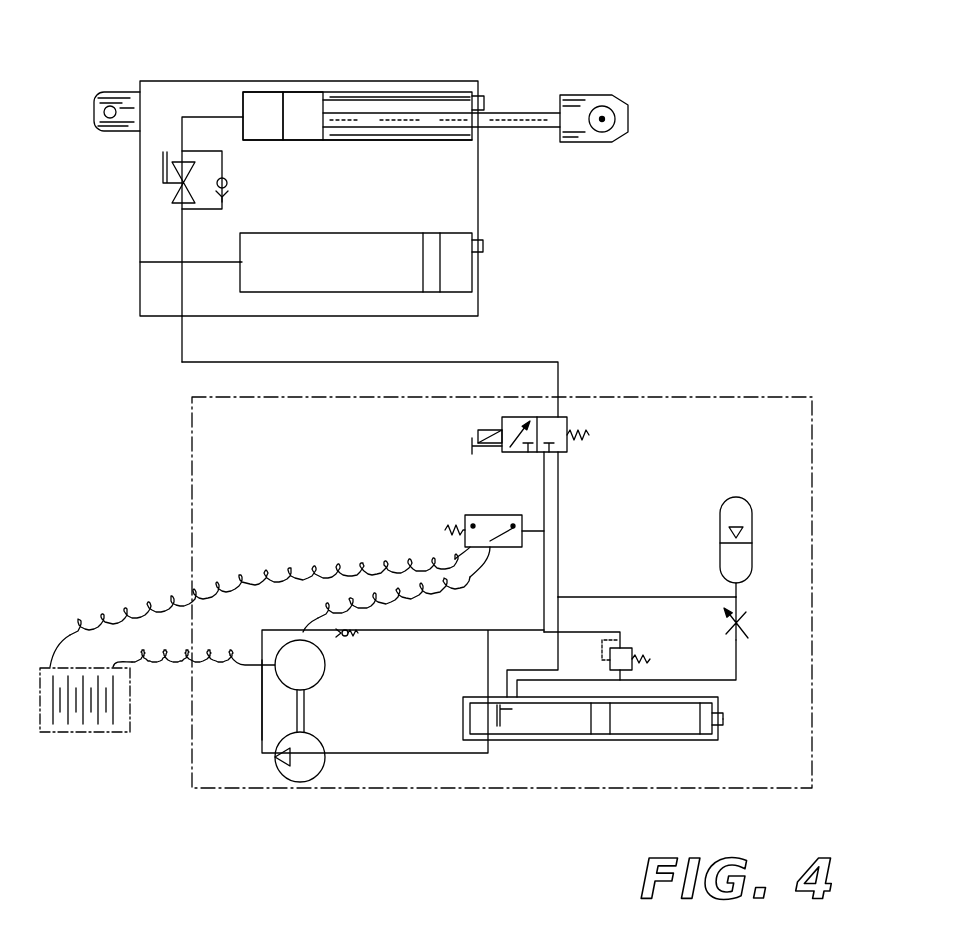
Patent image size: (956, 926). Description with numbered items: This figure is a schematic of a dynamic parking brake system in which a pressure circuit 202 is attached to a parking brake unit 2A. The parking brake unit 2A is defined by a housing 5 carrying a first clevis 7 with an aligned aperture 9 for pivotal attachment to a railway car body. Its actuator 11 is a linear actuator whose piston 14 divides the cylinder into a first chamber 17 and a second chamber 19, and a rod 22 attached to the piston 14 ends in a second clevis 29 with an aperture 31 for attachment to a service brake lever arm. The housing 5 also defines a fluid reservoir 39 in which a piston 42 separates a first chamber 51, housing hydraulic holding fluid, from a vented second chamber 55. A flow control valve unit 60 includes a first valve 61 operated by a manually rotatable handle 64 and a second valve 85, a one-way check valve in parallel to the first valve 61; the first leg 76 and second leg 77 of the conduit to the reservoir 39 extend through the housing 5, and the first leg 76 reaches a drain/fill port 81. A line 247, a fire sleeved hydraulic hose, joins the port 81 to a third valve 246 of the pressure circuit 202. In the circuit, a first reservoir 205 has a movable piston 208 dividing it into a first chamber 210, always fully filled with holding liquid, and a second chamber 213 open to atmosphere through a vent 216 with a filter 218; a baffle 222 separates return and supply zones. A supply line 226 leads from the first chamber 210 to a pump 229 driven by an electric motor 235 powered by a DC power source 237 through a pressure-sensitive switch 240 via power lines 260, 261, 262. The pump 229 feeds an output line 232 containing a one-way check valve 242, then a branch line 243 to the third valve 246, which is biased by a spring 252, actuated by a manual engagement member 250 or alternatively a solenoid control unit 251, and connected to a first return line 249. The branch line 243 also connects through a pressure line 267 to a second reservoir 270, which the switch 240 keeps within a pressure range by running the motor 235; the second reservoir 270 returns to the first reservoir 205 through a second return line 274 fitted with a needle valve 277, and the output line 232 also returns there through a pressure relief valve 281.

The housing 5 is at (190, 78).
The first clevis 7 is at (113, 97).
The aligned aperture 9 is at (105, 113).
The actuator 11 is at (370, 86).
The parking brake unit 2A is at (490, 88).
The first chamber 17 is at (263, 100).
The piston 14 is at (307, 137).
The rod 22 is at (346, 118).
The second chamber 19 is at (452, 137).
The aperture 31 is at (606, 117).
The second clevis 29 is at (618, 130).
The first leg 76 is at (182, 243).
The port 81 is at (182, 318).
The line 247 is at (507, 361).
The flow control valve unit 60 is at (167, 204).
The first valve 61 is at (172, 189).
The manually rotatable handle 64 is at (165, 162).
The second valve 85 is at (238, 183).
The second leg 77 is at (197, 262).
The fluid reservoir 39 is at (340, 233).
The first chamber 51 is at (270, 263).
The piston 42 is at (432, 270).
The second chamber 55 is at (465, 273).
The pressure circuit 202 is at (712, 388).
The third valve 246 is at (494, 422).
The manual engagement member 250 is at (490, 455).
The solenoid control unit 251 is at (480, 434).
The spring 252 is at (590, 435).
The first return line 249 is at (562, 517).
The branch line 243 is at (540, 592).
The pressure-sensitive switch 240 is at (465, 522).
The power line 261 is at (277, 573).
The power line 262 is at (407, 607).
The power line 260 is at (205, 650).
The DC power source 237 is at (92, 732).
The supply line 226 is at (413, 757).
The output line 232 is at (262, 707).
The one-way check valve 242 is at (353, 646).
The electric motor 235 is at (323, 675).
The pump 229 is at (295, 775).
The pressure relief valve 281 is at (627, 640).
The second return line 274 is at (736, 652).
The pressure line 267 is at (637, 595).
The second reservoir 270 is at (752, 547).
The valve 277 is at (748, 615).
The first reservoir 205 is at (643, 740).
The movable piston 208 is at (593, 730).
The first chamber 210 is at (550, 731).
The baffle 222 is at (487, 731).
The second chamber 213 is at (697, 731).
The vent 216 is at (724, 712).
The filter 218 is at (724, 722).